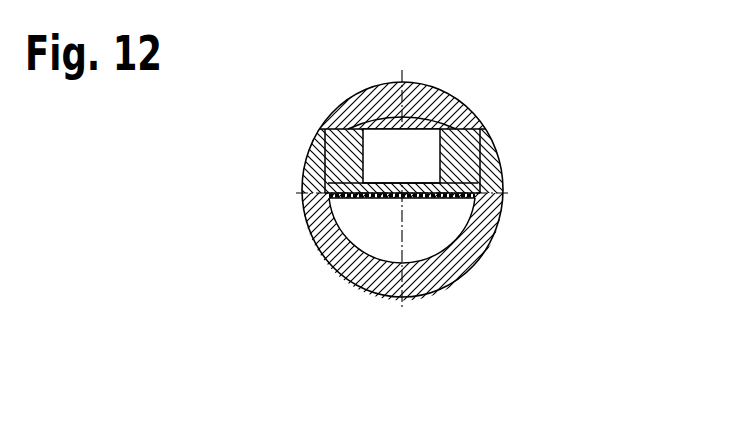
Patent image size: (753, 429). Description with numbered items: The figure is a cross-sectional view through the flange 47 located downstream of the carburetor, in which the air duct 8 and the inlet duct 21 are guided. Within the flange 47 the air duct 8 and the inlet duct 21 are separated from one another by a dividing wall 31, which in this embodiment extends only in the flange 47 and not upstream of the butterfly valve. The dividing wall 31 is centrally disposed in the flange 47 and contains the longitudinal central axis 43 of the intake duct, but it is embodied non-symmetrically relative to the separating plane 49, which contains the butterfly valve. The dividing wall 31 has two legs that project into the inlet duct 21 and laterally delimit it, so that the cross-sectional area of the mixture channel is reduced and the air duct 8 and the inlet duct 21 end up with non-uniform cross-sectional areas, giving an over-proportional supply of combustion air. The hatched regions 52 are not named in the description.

The air duct 8 is at (440, 235).
The inlet duct 21 is at (412, 137).
The dividing wall 31 is at (377, 198).
The longitudinal central axis 43 is at (400, 198).
The flange 47 is at (482, 220).
The separating plane 49 is at (490, 193).
The insert part 52 is at (477, 138).